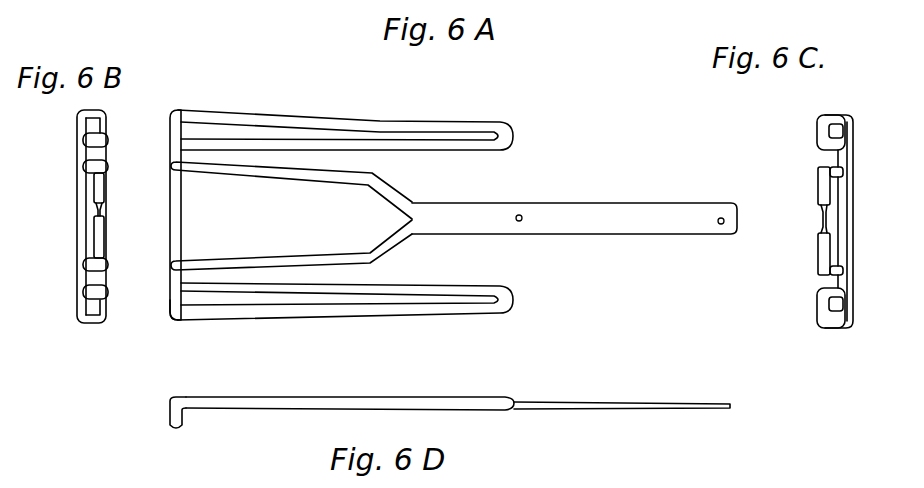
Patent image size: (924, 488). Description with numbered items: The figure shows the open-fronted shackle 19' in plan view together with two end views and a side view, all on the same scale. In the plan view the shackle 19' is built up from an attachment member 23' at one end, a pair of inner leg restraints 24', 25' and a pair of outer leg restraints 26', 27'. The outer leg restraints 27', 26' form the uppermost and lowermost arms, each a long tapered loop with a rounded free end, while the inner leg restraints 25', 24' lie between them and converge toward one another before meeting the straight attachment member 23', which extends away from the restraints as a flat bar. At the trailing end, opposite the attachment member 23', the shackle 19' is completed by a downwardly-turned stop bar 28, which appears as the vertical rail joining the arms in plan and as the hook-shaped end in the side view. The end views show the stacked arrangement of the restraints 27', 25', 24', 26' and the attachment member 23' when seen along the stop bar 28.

In FIG. 6A, the open-fronted shackle 19' is at (308, 192).
In FIG. 6A, the outer leg restraint 27' is at (345, 110).
In FIG. 6C, the outer leg restraint 27' is at (796, 121).
In FIG. 6A, the outer leg restraint 26' is at (345, 285).
In FIG. 6C, the outer leg restraint 26' is at (797, 307).
In FIG. 6A, the inner leg restraint 25' is at (291, 197).
In FIG. 6A, the inner leg restraint 24' is at (291, 238).
In FIG. 6A, the attachment member 23' is at (574, 198).
In FIG. 6B, the attachment member 23' is at (129, 215).
In FIG. 6C, the attachment member 23' is at (804, 221).
In FIG. 6D, the attachment member 23' is at (458, 385).
In FIG. 6A, the stop bar 28 is at (172, 302).
In FIG. 6B, the stop bar 28 is at (83, 182).
In FIG. 6C, the stop bar 28 is at (838, 253).
In FIG. 6D, the stop bar 28 is at (170, 410).